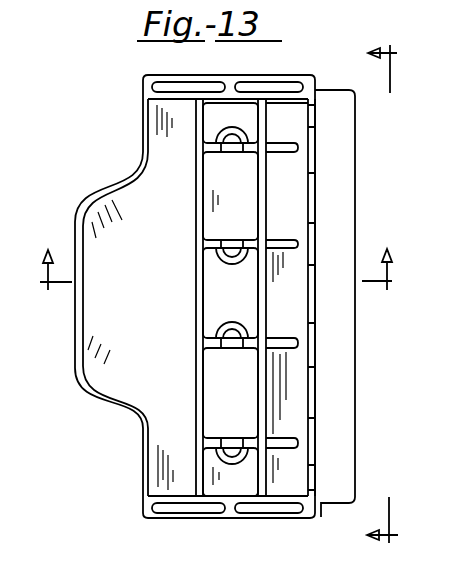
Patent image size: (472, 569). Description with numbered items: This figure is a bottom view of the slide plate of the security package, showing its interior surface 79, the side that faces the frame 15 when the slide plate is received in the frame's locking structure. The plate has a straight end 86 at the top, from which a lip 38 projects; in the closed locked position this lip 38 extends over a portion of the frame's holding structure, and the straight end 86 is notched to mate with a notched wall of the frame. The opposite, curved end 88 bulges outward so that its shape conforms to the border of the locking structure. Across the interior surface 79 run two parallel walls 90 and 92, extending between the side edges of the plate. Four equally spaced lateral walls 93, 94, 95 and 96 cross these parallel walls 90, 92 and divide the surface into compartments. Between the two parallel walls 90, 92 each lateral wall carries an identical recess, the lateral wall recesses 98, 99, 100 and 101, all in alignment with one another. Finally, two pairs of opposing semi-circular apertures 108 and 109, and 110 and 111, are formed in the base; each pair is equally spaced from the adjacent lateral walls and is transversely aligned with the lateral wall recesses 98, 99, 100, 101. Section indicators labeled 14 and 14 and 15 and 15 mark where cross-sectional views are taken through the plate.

The section line 14- 14 is at (364, 298).
The frame 15 is at (222, 256).
The lip 38 is at (357, 140).
The interior surface 79 is at (112, 202).
The straight end 86 is at (311, 77).
The curved end 88 is at (79, 336).
The parallel wall 90 is at (200, 443).
The parallel wall 92 is at (268, 400).
The lateral wall 93 is at (298, 445).
The lateral wall 94 is at (298, 346).
The lateral wall 95 is at (298, 246).
The lateral wall 96 is at (298, 147).
The lateral wall recess 98 is at (232, 440).
The lateral wall recess 99 is at (232, 349).
The lateral wall recess 100 is at (228, 246).
The lateral wall recess 101 is at (222, 151).
The semi-circular aperture 108 is at (222, 130).
The semi-circular aperture 109 is at (237, 266).
The semi-circular aperture 110 is at (222, 326).
The semi-circular aperture 111 is at (231, 466).